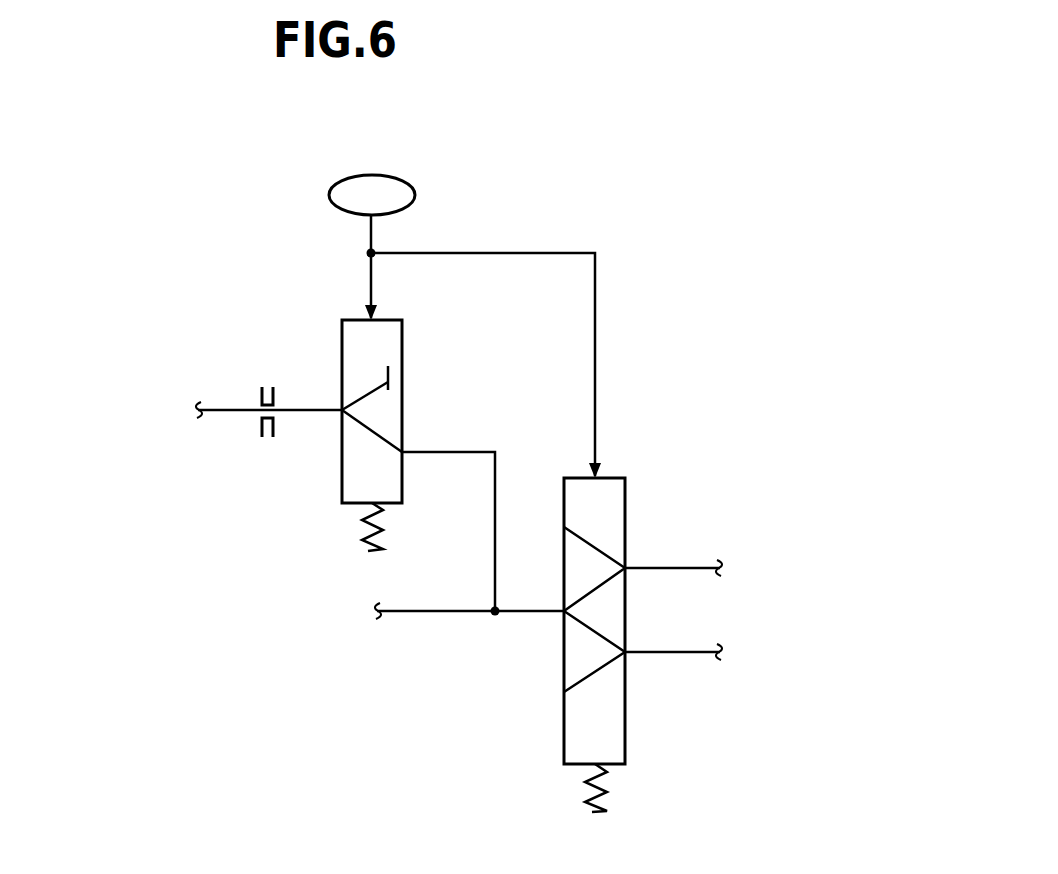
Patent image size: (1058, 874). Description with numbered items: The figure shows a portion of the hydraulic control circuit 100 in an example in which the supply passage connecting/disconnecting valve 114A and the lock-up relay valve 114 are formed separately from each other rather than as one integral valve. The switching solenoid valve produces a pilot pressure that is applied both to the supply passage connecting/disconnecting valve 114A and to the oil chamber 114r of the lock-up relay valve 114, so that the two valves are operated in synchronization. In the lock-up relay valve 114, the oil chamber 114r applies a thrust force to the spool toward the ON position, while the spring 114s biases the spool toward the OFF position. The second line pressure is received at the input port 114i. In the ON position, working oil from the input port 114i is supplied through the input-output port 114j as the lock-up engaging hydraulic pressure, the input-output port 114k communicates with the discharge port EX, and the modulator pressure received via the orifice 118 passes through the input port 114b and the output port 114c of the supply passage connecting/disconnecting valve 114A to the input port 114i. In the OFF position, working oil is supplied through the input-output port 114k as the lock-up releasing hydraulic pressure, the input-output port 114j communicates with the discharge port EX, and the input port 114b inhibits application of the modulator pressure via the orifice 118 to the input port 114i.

The hydraulic control circuit 100 is at (575, 152).
The lock-up relay valve 114 is at (582, 488).
The supply passage connecting/disconnecting valve 114A is at (353, 328).
The oil chamber 114r is at (376, 318).
The input port 114b is at (342, 410).
The output port 114c is at (402, 452).
The orifice 118 is at (257, 392).
The input-output port 114k is at (625, 568).
The input-output port 114j is at (625, 652).
The input port 114i is at (564, 612).
The spring 114s is at (602, 807).